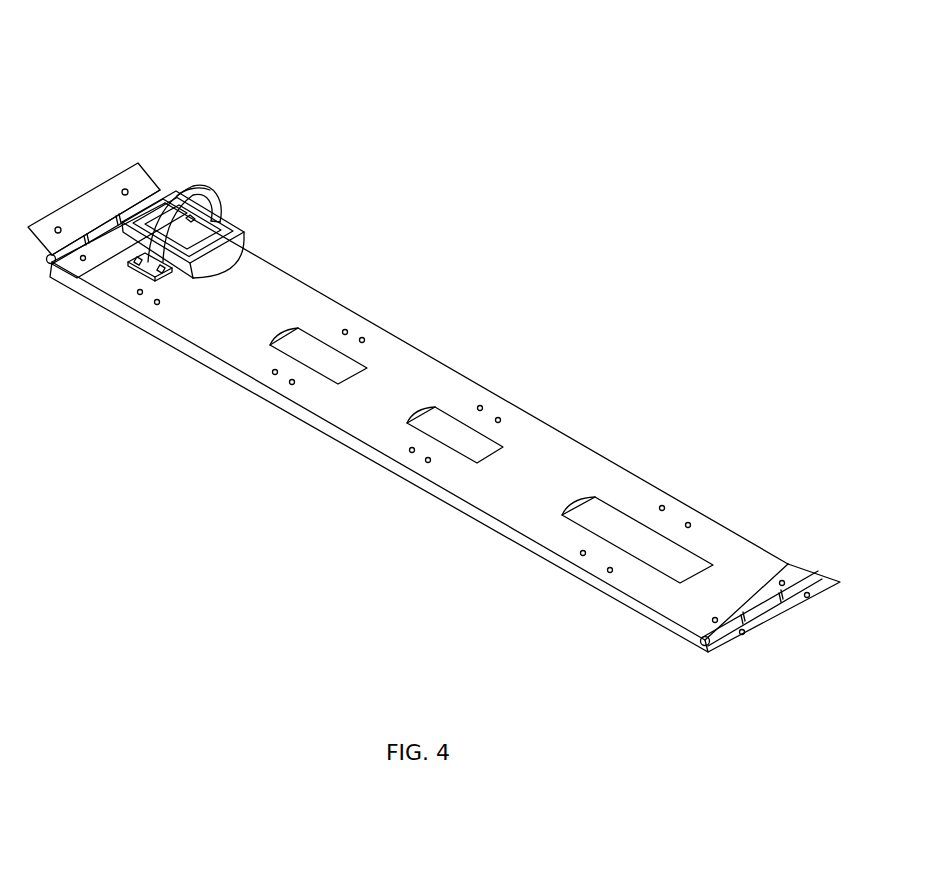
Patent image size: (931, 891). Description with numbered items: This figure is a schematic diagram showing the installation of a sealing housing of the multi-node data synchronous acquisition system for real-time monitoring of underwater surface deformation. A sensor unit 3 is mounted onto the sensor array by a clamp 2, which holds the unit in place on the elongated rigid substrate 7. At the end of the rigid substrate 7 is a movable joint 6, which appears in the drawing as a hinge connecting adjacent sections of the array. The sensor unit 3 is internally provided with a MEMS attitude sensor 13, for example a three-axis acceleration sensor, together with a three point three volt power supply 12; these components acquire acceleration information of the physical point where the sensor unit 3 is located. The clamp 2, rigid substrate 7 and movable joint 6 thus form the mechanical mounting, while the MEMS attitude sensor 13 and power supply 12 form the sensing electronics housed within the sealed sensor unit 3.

The clamp 2 is at (207, 307).
The sensor unit 3 is at (277, 307).
The movable joint 6 is at (88, 205).
The rigid substrate 7 is at (358, 410).
The power supply 12 is at (183, 189).
The MEMS attitude sensor 13 is at (203, 233).